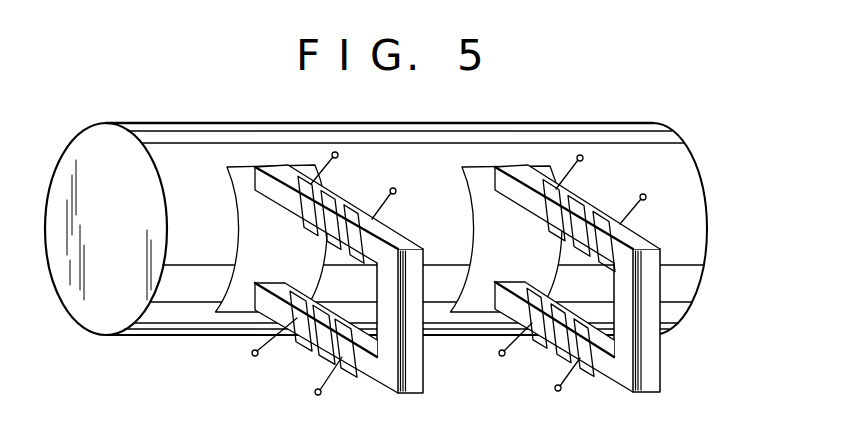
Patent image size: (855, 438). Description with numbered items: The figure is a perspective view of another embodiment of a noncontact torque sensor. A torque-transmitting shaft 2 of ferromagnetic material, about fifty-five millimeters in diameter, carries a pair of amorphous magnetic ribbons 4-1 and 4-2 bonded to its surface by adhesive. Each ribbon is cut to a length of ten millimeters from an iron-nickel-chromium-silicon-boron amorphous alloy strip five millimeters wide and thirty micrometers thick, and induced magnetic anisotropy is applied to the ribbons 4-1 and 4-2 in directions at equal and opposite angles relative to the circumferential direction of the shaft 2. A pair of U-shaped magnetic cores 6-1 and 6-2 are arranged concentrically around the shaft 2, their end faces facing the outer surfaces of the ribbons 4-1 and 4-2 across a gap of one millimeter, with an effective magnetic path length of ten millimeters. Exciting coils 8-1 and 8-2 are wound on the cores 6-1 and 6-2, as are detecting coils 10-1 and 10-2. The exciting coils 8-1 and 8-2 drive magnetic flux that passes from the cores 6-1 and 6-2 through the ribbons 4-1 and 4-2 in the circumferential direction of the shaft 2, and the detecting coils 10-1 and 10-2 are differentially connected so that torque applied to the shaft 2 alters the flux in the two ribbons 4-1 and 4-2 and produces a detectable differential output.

The shaft 2 is at (624, 130).
The amorphous magnetic ribbon 4-1 is at (232, 190).
The amorphous magnetic ribbon 4-2 is at (477, 167).
The U-shaped magnetic core 6-1 is at (421, 356).
The U-shaped magnetic core 6-2 is at (660, 354).
The exciting coil 8-1 is at (348, 203).
The exciting coil 8-2 is at (601, 206).
The detecting coil 10-1 is at (297, 340).
The detecting coil 10-2 is at (542, 339).